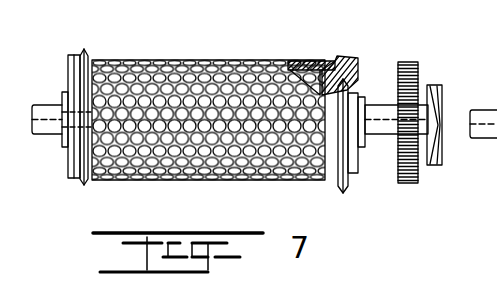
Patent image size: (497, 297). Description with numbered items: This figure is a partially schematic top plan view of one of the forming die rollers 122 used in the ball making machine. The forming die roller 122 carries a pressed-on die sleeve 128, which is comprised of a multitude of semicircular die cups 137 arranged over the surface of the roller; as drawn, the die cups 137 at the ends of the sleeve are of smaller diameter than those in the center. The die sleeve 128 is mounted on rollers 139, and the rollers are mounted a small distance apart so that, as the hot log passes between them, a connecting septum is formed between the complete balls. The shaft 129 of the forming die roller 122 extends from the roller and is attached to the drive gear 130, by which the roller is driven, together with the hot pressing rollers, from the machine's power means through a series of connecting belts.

The forming die roller 122 is at (208, 118).
The die sleeve 128 is at (300, 61).
The shaft 129 is at (380, 140).
The drive gear 130 is at (408, 62).
The semicircular die cups 137 is at (237, 182).
The rollers 139 is at (67, 168).